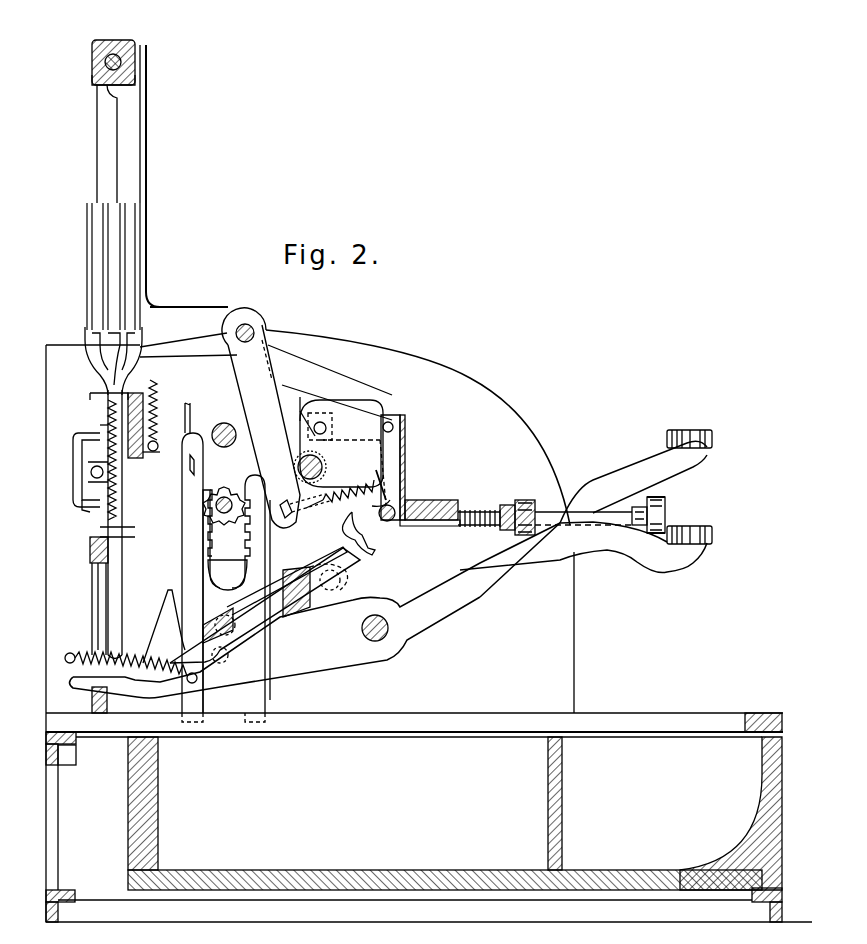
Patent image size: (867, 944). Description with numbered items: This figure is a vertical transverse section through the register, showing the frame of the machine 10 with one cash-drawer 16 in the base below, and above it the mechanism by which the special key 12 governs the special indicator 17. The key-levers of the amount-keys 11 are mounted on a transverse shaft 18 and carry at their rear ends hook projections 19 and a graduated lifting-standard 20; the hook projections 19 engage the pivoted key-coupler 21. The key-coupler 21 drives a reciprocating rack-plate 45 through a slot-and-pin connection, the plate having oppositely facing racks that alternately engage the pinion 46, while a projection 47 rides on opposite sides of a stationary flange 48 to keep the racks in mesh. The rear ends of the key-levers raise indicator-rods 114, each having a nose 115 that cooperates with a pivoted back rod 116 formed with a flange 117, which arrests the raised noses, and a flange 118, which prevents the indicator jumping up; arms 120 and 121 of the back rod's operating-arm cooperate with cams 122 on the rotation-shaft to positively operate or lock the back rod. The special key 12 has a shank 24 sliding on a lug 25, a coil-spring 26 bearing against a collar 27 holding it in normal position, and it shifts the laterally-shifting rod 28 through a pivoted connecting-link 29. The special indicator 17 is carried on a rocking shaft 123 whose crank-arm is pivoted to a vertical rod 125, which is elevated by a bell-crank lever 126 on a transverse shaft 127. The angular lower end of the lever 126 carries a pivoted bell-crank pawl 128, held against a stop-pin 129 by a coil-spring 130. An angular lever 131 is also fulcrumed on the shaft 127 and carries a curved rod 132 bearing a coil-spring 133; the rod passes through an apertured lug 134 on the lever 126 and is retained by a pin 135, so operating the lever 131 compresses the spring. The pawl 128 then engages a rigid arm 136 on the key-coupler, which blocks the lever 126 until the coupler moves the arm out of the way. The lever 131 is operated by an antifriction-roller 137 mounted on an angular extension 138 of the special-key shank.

The frame of the machine 10 is at (315, 610).
The amount-keys 11 is at (625, 470).
The special key 12 is at (666, 510).
The cash-drawer 16 is at (429, 614).
The special indicator 17 is at (112, 40).
The transverse shaft 18 is at (362, 632).
The hook projections 19 is at (190, 410).
The graduated lifting-standard 20 is at (140, 640).
The key-coupler 21 is at (226, 610).
The shank 24 is at (546, 512).
The lug 25 is at (522, 500).
The coil-spring 26 is at (460, 495).
The collar 27 is at (507, 505).
The laterally-shifting rod 28 is at (395, 522).
The connecting-link 29 is at (430, 522).
The rack-plate 45 is at (182, 522).
The pinion 46 is at (223, 449).
The projection 47 is at (190, 466).
The stationary flange 48 is at (230, 492).
The indicator-rods 114 is at (118, 575).
The nose 115 is at (100, 527).
The back rod 116 is at (85, 470).
The flange 117 is at (100, 425).
The flange 118 is at (92, 500).
The arm 120 is at (318, 418).
The arm 121 is at (312, 425).
The cams 122 is at (124, 82).
The rocking shaft 123 is at (122, 62).
The vertical rod 125 is at (118, 163).
The bell-crank lever 126 is at (184, 350).
The transverse shaft 127 is at (260, 333).
The bell-crank pawl 128 is at (380, 528).
The stop-pin 129 is at (372, 500).
The coil-spring 130 is at (338, 418).
The angular lever 131 is at (330, 362).
The curved rod 132 is at (404, 452).
The coil-spring 133 is at (402, 432).
The apertured lug 134 is at (287, 577).
The pin 135 is at (252, 534).
The rigid arm 136 is at (362, 560).
The antifriction-roller 137 is at (392, 420).
The angular extension 138 is at (372, 475).